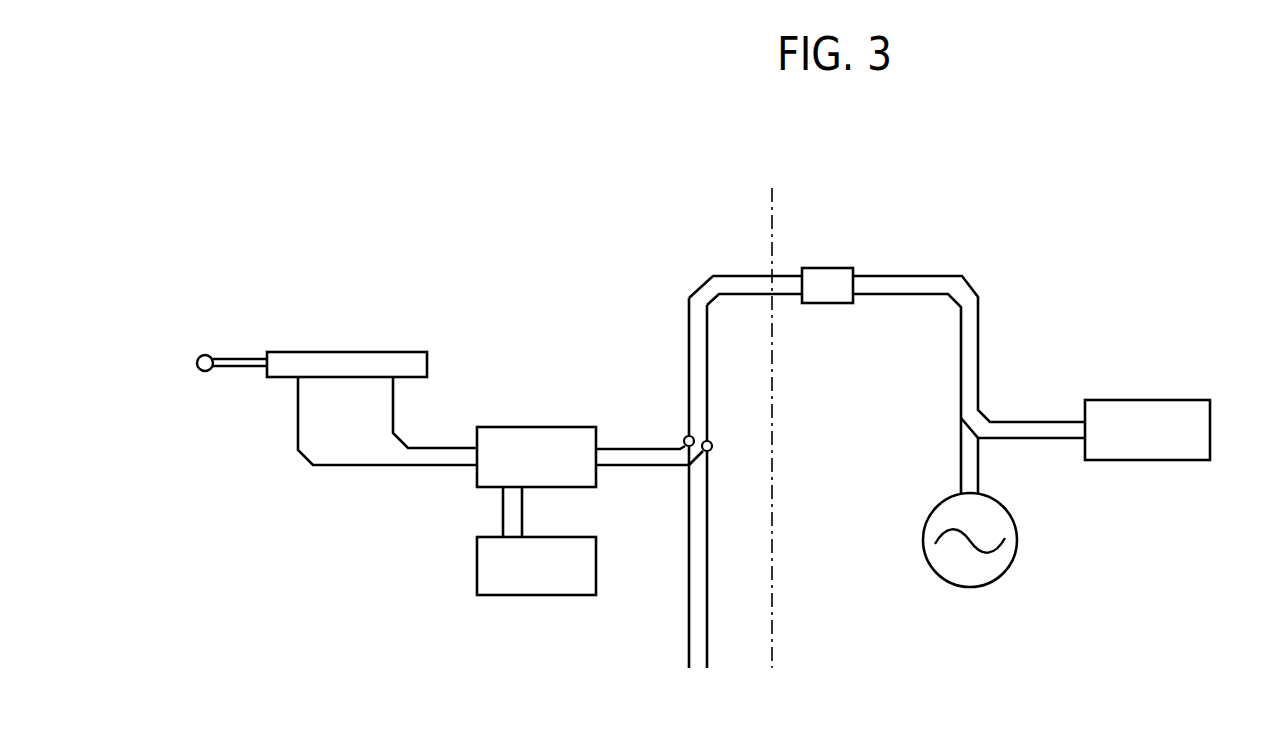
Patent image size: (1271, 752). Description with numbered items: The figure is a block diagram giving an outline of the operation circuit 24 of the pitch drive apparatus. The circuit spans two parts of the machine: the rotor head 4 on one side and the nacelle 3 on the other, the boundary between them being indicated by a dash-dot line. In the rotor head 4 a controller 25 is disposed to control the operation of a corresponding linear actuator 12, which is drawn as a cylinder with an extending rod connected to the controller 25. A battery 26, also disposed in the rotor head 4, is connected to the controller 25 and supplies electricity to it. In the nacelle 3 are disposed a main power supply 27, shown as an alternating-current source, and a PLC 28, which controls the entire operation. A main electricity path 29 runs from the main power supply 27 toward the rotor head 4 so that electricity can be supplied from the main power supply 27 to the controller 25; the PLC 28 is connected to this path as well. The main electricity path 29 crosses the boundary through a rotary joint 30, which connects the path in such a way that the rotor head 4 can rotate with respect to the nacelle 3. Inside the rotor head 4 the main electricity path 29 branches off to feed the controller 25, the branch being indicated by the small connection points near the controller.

The nacelle 3 is at (1057, 231).
The rotor head 4 is at (609, 219).
The linear actuator 12 is at (338, 350).
The operation circuit 24 is at (821, 572).
The controller 25 is at (533, 427).
The battery (power supply) 26 is at (477, 570).
The main power supply 27 is at (1017, 545).
The PLC (Programmable Logic Controller) 28 is at (1185, 400).
The main electricity path 29 is at (980, 354).
The rotary joint 30 is at (825, 267).